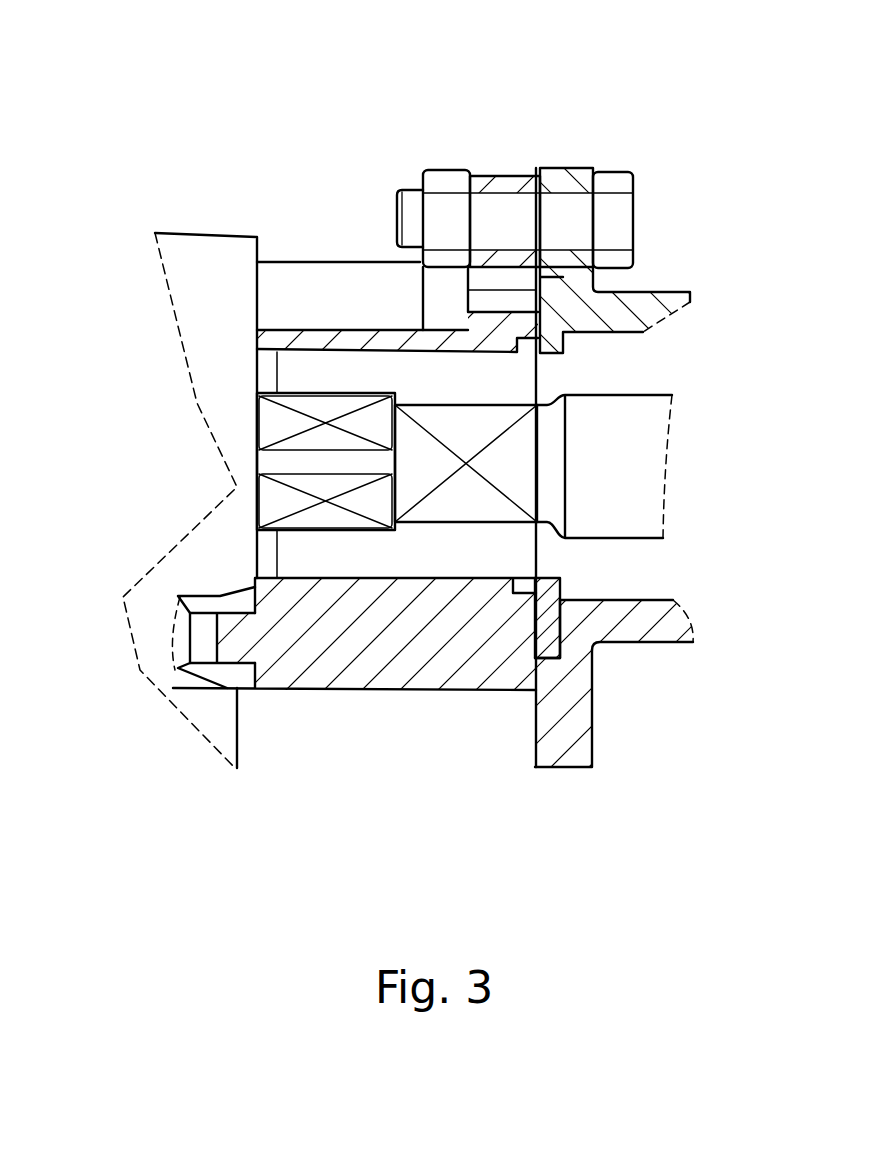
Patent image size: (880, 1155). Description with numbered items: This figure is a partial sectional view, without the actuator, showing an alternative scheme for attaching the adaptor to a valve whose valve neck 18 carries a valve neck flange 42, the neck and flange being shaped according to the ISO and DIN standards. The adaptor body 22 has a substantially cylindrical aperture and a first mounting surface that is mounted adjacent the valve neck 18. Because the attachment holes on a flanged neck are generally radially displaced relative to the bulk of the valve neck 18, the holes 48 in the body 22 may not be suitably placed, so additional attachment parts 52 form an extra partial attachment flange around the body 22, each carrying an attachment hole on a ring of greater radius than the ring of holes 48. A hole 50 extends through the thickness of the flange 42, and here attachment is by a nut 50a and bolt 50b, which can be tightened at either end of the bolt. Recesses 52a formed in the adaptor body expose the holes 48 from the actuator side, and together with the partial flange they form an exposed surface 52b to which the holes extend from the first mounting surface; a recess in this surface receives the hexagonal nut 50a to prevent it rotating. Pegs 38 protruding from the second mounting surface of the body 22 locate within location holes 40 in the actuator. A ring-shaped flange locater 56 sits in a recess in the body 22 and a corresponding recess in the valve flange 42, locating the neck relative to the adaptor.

The valve neck 18 is at (637, 643).
The adaptor body 22 is at (405, 692).
The pegs 38 is at (238, 663).
The location holes 40 is at (187, 640).
The valve neck flange 42 is at (565, 167).
The holes 48 is at (468, 290).
The hole 50 is at (585, 168).
The nut 50a is at (443, 170).
The bolt 50b is at (630, 237).
The additional attachment parts 52 is at (507, 175).
The recesses 52a is at (277, 308).
The exposed surface 52b is at (413, 268).
The flange locater 56 is at (563, 577).